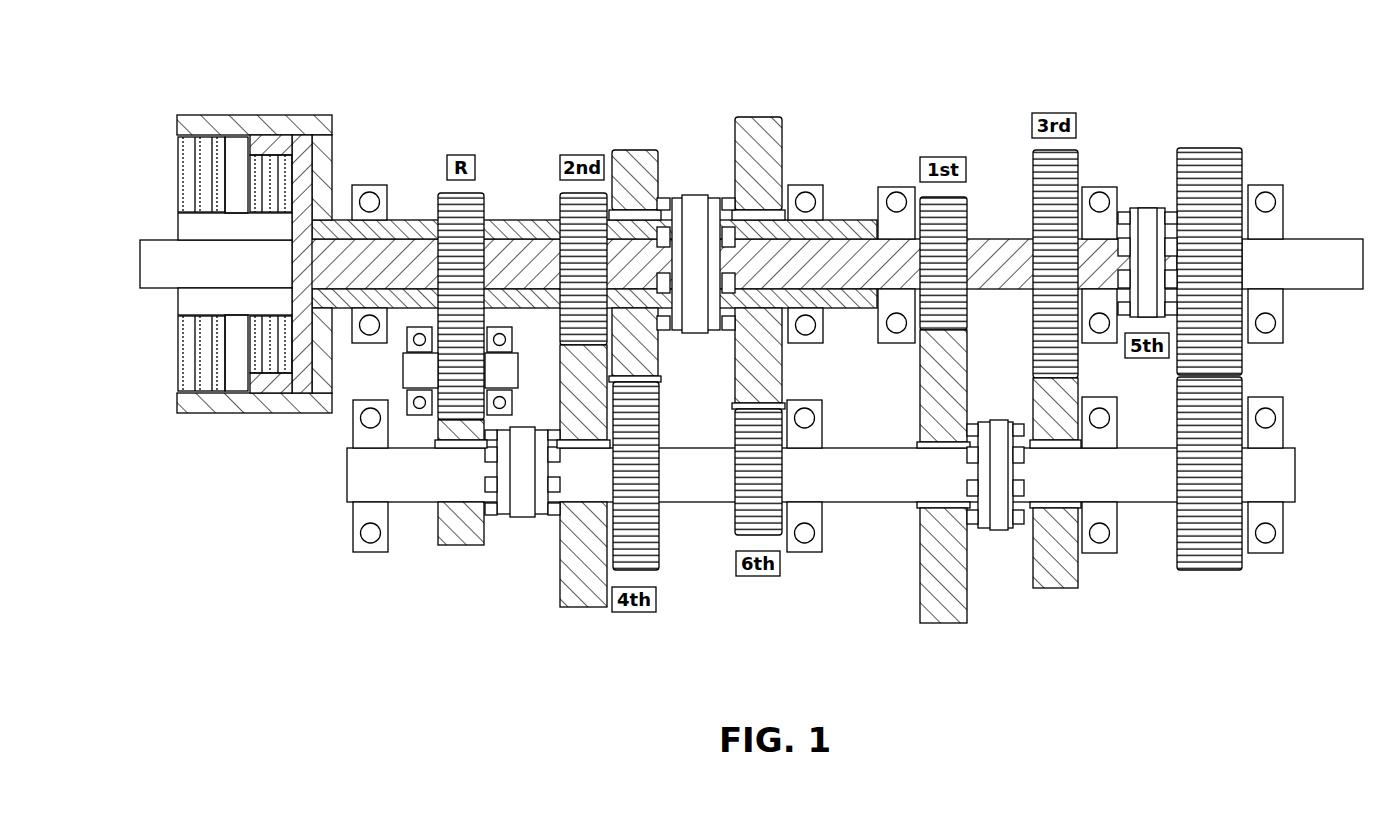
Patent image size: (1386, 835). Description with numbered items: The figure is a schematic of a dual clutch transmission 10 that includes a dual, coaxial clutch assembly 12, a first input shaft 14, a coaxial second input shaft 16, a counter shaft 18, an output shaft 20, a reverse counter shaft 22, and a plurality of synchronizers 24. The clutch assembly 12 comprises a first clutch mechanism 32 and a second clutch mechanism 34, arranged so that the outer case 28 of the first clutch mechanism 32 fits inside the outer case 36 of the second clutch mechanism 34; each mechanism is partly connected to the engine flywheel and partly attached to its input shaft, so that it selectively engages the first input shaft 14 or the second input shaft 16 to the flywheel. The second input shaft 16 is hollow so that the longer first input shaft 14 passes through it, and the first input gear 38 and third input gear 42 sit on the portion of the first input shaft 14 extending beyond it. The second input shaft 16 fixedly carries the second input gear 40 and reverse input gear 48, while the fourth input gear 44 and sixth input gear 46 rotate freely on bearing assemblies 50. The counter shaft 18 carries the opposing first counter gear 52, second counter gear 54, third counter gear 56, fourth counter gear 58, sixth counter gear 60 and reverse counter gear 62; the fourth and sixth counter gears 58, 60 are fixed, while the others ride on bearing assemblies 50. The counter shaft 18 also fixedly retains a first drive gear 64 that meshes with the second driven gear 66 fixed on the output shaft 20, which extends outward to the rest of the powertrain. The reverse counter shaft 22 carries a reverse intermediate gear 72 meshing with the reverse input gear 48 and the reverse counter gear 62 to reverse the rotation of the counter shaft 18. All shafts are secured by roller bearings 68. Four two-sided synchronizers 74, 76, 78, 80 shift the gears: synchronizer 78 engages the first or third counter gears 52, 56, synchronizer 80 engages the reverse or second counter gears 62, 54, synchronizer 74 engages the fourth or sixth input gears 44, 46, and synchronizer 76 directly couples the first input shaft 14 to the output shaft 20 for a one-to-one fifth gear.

The dual clutch transmission 10 is at (583, 108).
The dual, coaxial clutch assembly 12 is at (276, 209).
The first input shaft 14 is at (1003, 245).
The second input shaft 16 is at (398, 230).
The counter shaft 18 is at (360, 478).
The output shaft 20 is at (1340, 255).
The reverse counter shaft 22 is at (390, 380).
The synchronizers 24 is at (712, 138).
The outer case of the first clutch mechanism 28 is at (305, 180).
The first clutch mechanism 32 is at (278, 165).
The second clutch mechanism 34 is at (207, 145).
The outer case of the second clutch mechanism 36 is at (333, 135).
The first input gear 38 is at (968, 210).
The second input gear 40 is at (562, 210).
The third input gear 42 is at (1073, 165).
The fourth input gear 44 is at (633, 153).
The sixth input gear 46 is at (782, 135).
The reverse input gear 48 is at (488, 205).
The bearing assemblies 50 is at (438, 505).
The first counter gear 52 is at (935, 600).
The second counter gear 54 is at (578, 600).
The third counter gear 56 is at (1052, 583).
The fourth counter gear 58 is at (650, 555).
The sixth counter gear 60 is at (735, 520).
The reverse counter gear 62 is at (445, 535).
The first drive gear 64 is at (1185, 550).
The second driven gear 66 is at (1233, 165).
The roller bearings 68 is at (817, 197).
The reverse intermediate gear 72 is at (440, 367).
The synchronizer 74 is at (696, 210).
The synchronizer 76 is at (1147, 217).
The synchronizer 78 is at (1000, 520).
The synchronizer 80 is at (522, 507).